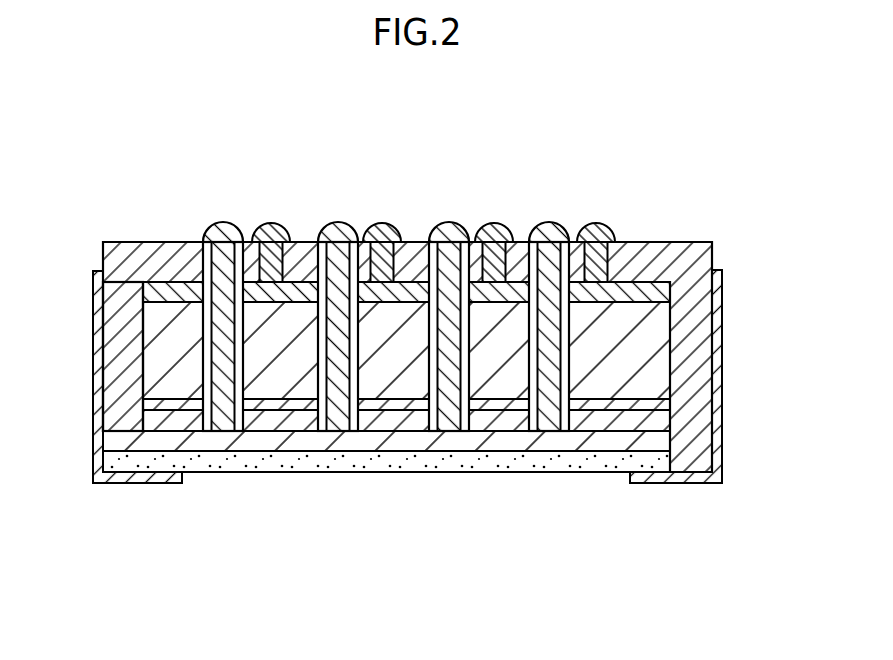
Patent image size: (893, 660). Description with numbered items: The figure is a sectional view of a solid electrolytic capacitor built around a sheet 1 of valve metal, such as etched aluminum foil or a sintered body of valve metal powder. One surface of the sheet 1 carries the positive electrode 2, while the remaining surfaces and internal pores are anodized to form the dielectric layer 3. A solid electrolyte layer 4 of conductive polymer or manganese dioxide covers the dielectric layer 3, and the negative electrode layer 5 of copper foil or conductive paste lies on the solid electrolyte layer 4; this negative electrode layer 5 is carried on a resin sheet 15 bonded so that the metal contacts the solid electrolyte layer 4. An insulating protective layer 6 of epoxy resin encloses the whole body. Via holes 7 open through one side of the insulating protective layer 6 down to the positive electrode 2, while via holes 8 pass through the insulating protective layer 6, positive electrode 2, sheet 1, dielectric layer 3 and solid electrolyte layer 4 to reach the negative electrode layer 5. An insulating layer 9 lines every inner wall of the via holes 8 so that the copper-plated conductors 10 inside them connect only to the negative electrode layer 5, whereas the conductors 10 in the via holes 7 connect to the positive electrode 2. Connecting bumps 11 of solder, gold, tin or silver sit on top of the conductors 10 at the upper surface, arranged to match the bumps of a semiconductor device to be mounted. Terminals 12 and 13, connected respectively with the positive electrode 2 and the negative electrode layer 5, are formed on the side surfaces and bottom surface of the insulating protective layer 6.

The sheet of valve metal 1 is at (642, 328).
The positive electrode 2 is at (647, 290).
The dielectric layer 3 is at (657, 403).
The solid electrolyte layer 4 is at (657, 418).
The negative electrode layer 5 is at (647, 445).
The insulating protective layer 6 is at (712, 242).
The via holes 7 is at (618, 242).
The via holes 8 is at (202, 246).
The insulating layer 9 is at (141, 281).
The conductors 10 is at (240, 238).
The connecting bumps 11 is at (237, 241).
The terminal 12 is at (721, 282).
The terminal 13 is at (93, 413).
The resin sheet 15 is at (550, 465).